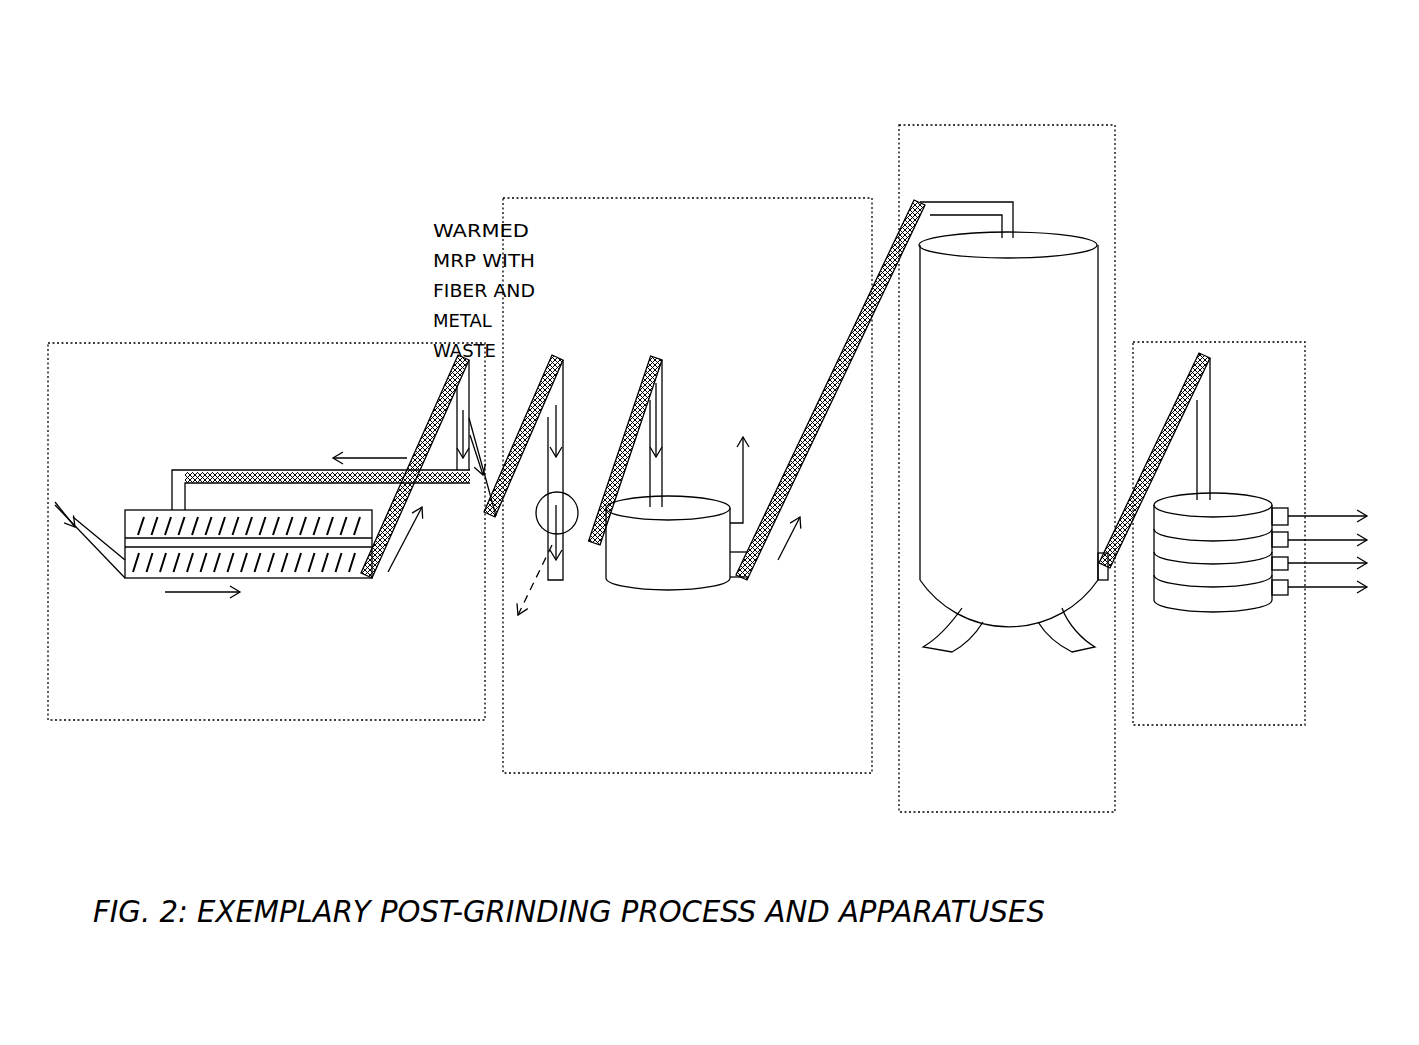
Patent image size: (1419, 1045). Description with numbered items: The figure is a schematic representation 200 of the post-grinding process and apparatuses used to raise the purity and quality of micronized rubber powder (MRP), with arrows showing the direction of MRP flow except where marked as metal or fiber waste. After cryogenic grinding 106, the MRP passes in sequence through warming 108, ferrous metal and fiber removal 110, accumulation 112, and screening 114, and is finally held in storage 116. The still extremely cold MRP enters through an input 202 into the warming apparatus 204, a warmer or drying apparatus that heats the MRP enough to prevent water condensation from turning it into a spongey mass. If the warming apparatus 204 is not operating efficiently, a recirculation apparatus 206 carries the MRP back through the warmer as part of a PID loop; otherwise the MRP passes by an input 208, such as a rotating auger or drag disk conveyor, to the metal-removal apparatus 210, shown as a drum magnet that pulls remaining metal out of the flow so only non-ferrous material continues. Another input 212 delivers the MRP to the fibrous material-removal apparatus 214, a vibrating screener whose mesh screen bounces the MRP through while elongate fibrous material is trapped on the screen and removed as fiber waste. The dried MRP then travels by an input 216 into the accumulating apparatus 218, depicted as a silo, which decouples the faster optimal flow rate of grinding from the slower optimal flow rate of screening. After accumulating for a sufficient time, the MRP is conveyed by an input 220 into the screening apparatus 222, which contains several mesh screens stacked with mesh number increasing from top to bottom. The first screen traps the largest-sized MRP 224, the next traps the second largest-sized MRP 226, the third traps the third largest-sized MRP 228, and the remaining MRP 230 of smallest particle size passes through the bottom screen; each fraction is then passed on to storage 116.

The schematic representation of the post-grinding process and apparatuses 200 is at (1233, 87).
The cryogenic grinding 106 is at (129, 441).
The warming 108 is at (266, 531).
The ferrous metal and fiber removal 110 is at (687, 485).
The accumulation 112 is at (1007, 468).
The screening 114 is at (1219, 533).
The storage 116 is at (1369, 445).
The input 202 is at (90, 563).
The warming apparatus 204 is at (342, 582).
The recirculation apparatus 206 is at (321, 447).
The input 208 is at (488, 500).
The metal-removal apparatus 210 is at (575, 497).
The input 212 is at (665, 415).
The fibrous material-removal apparatus 214 is at (635, 590).
The input 216 is at (855, 323).
The accumulating apparatus 218 is at (1013, 442).
The input 220 is at (1177, 420).
The screening apparatus 222 is at (1237, 490).
The largest-sized MRP 224 is at (1338, 518).
The second largest-sized MRP 226 is at (1338, 541).
The third largest-sized MRP 228 is at (1338, 565).
The remaining MRP 230 is at (1338, 588).